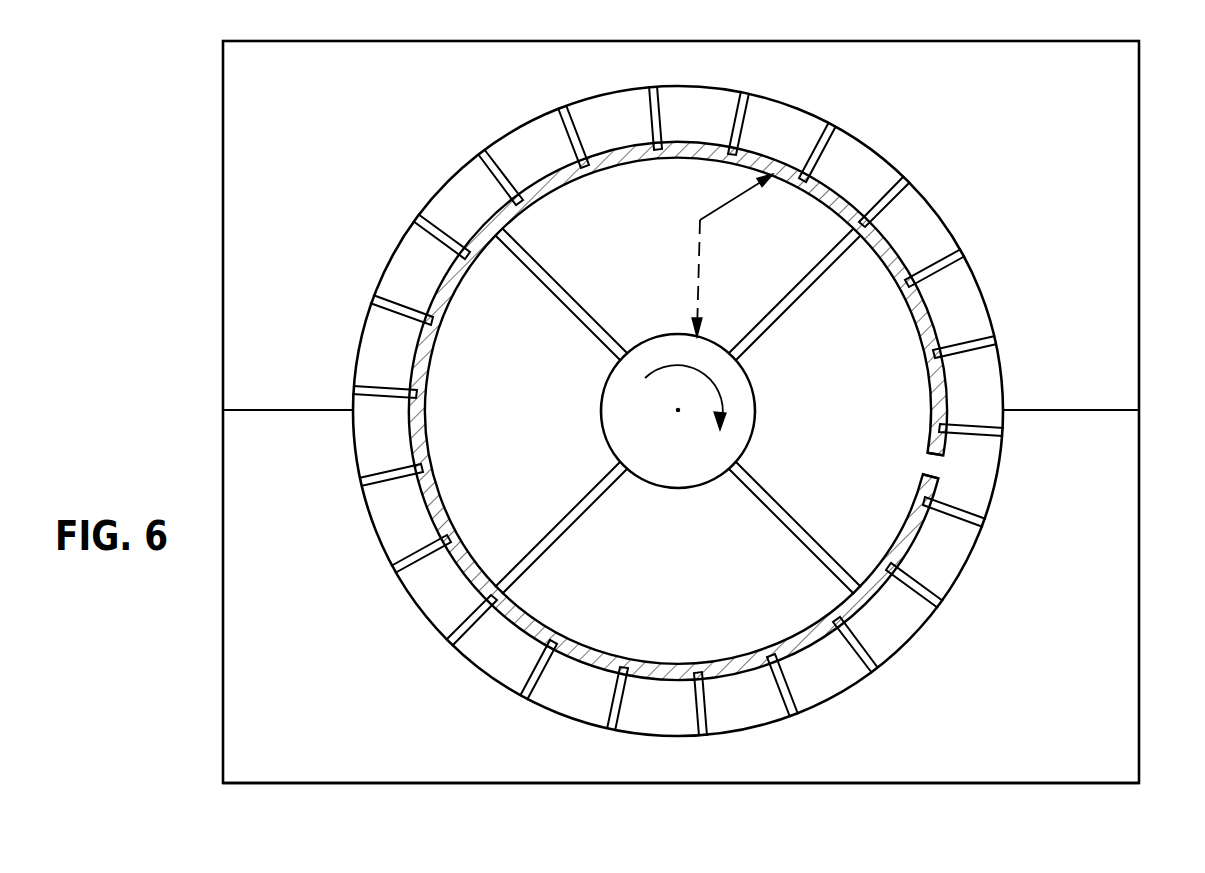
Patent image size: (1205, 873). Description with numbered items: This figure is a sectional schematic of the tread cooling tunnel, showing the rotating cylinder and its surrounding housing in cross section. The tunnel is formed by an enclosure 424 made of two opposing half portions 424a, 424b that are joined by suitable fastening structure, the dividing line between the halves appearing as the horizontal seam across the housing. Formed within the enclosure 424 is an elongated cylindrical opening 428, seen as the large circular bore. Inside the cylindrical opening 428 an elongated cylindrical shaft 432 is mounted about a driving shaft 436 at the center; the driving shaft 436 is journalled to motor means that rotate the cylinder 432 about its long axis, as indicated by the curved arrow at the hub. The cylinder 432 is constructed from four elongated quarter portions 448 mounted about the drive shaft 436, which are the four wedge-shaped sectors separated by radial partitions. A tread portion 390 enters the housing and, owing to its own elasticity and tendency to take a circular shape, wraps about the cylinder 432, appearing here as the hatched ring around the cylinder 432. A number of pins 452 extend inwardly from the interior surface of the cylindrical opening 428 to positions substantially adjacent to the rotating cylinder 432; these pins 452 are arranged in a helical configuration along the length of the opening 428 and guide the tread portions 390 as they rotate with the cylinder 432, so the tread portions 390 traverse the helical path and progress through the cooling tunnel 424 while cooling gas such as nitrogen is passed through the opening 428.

The tread portion 390 is at (907, 255).
The enclosure 424 is at (223, 292).
The half portion 424a is at (1127, 290).
The half portion 424b is at (1127, 632).
The cylindrical opening 428 is at (493, 143).
The cylindrical shaft 432 is at (932, 467).
The driving shaft 436 is at (752, 438).
The quarter portion 448 is at (630, 227).
The pin 452 is at (809, 144).